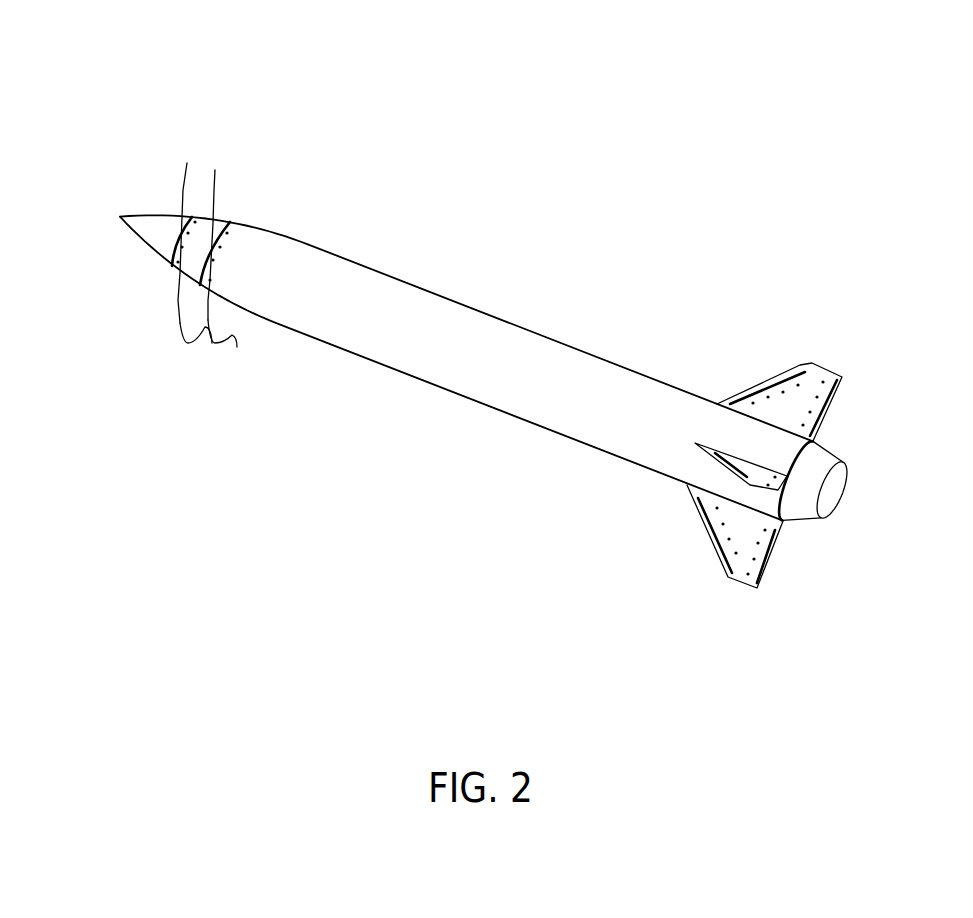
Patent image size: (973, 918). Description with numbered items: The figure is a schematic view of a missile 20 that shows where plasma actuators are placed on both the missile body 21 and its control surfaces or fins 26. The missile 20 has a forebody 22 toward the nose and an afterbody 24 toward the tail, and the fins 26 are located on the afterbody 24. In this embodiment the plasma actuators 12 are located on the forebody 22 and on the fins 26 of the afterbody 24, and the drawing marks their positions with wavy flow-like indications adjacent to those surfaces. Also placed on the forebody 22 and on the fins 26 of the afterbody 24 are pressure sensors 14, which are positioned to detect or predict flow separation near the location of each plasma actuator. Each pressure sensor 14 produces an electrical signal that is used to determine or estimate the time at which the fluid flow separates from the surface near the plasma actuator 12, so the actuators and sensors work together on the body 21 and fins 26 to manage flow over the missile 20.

The plasma actuator 12 is at (215, 170).
The pressure sensor 14 is at (237, 347).
The missile 20 is at (502, 347).
The missile body 21 is at (333, 293).
The forebody 22 is at (247, 260).
The afterbody 24 is at (648, 403).
The fins 26 is at (737, 520).